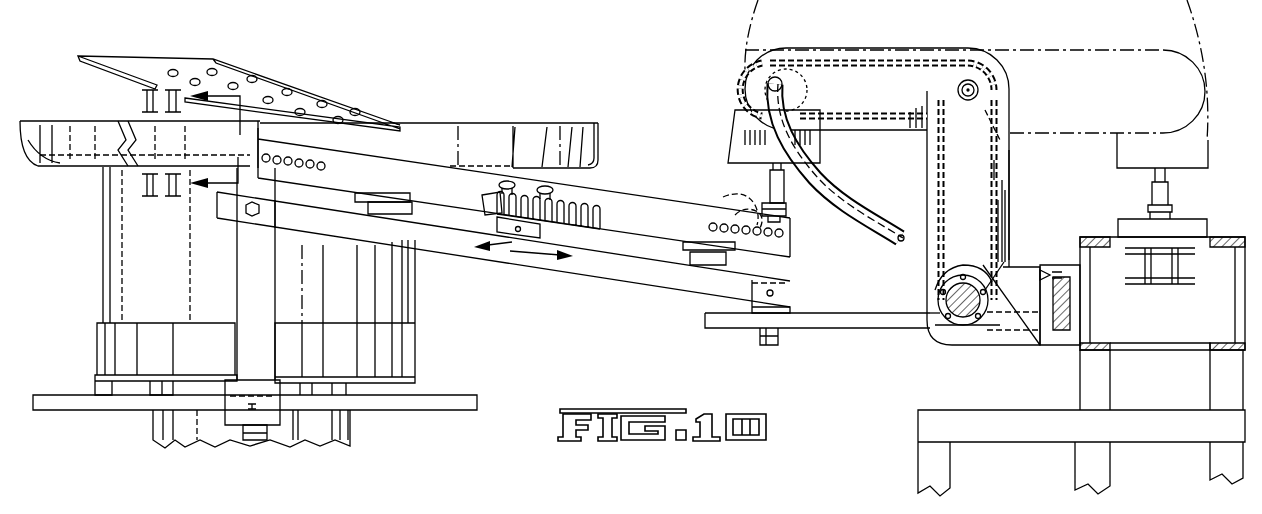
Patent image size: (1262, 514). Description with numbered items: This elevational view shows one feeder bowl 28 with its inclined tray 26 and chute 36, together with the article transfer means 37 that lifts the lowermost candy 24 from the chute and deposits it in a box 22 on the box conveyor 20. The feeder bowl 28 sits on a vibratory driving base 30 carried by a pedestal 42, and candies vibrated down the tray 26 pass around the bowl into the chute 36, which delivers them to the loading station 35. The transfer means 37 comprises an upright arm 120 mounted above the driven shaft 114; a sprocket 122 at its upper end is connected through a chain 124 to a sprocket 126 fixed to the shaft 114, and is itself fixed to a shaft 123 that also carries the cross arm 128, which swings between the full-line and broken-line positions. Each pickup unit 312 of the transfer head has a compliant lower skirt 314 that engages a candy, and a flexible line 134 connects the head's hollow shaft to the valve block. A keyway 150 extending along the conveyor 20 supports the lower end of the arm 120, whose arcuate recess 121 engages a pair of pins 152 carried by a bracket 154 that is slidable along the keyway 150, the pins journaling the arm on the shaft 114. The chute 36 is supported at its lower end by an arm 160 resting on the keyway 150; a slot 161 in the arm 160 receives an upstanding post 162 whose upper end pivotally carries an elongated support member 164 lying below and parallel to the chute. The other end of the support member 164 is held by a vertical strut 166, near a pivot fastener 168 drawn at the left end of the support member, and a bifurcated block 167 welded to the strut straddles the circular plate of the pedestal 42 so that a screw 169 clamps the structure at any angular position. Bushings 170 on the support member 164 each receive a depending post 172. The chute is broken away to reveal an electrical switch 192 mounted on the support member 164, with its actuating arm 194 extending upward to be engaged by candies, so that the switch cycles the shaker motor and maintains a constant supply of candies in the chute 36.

The box conveyor 20 is at (1104, 225).
The box 22 is at (1195, 220).
The candy 24 is at (545, 186).
The inclined tray 26 is at (165, 62).
The feeder bowl 28 is at (510, 108).
The vibratory driving base 30 is at (104, 250).
The loading station 35 is at (752, 195).
The chute 36 is at (630, 200).
The article transfer means 37 is at (715, 58).
The pedestal 42 is at (340, 430).
The driven shaft 114 is at (950, 318).
The upright arm 120 is at (1010, 188).
The arcuate recess 121 is at (935, 298).
The sprocket 122 is at (1011, 148).
The shaft 123 is at (979, 88).
The chain 124 is at (1010, 168).
The sprocket 126 is at (1000, 262).
The cross arm 128 is at (915, 52).
The flexible line 134 is at (848, 180).
The keyway 150 is at (1030, 282).
The pin 152 is at (938, 308).
The bracket 154 is at (1030, 330).
The arm 160 is at (745, 332).
The slot 161 is at (876, 322).
The upstanding post 162 is at (792, 306).
The support member 164 is at (615, 281).
The vertical strut 166 is at (240, 255).
The bifurcated block 167 is at (236, 415).
The pivot bolt 168 is at (240, 225).
The screw 169 is at (256, 442).
The bushing 170 is at (405, 212).
The depending post 172 is at (358, 196).
The electrical switch 192 is at (508, 238).
The actuating arm 194 is at (530, 222).
The pickup unit 312 is at (715, 118).
The compliant lower skirt 314 is at (788, 207).